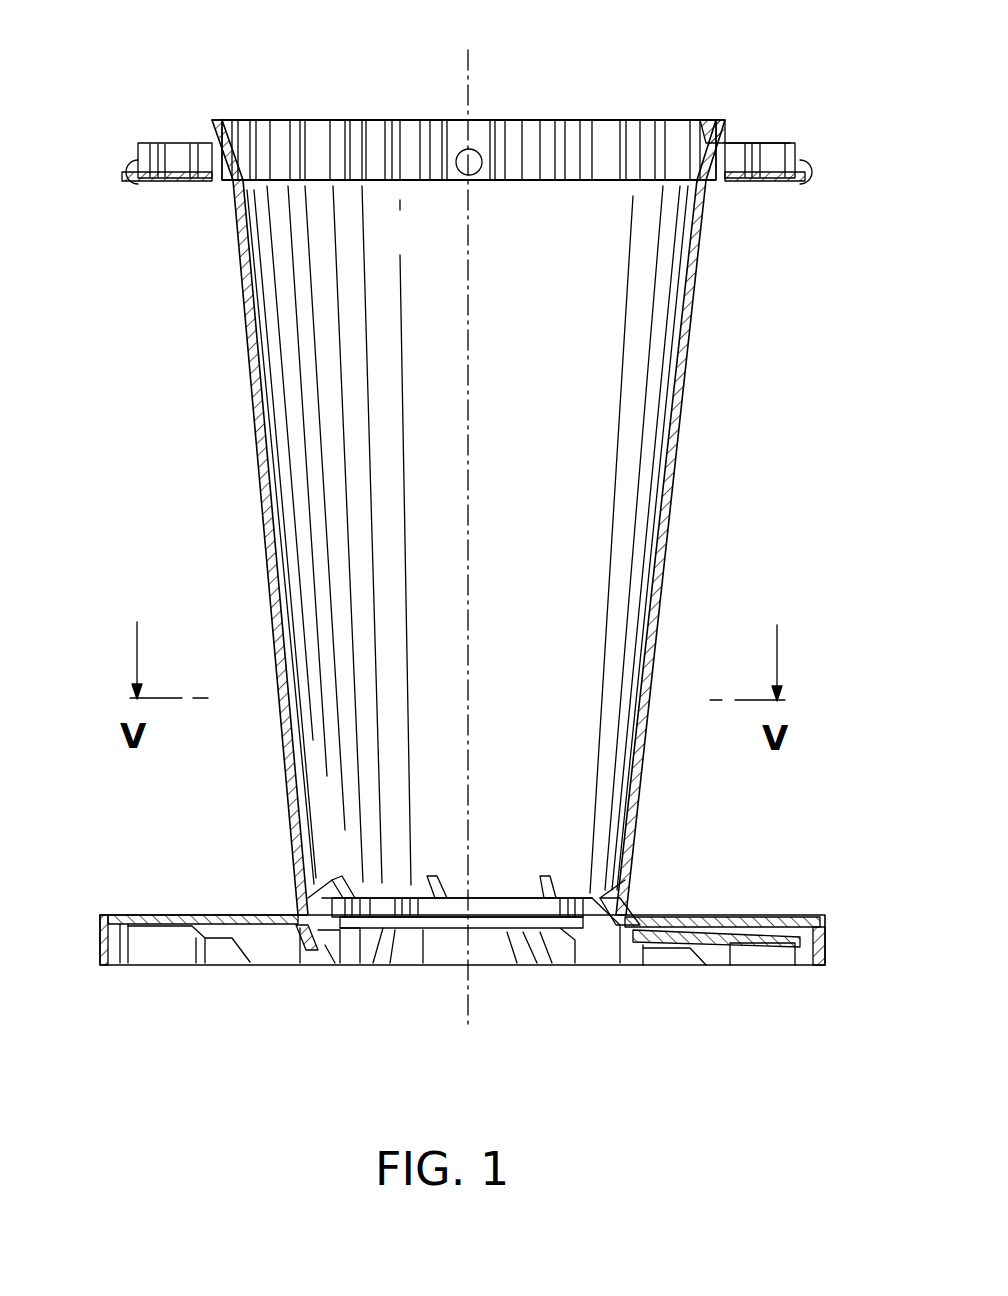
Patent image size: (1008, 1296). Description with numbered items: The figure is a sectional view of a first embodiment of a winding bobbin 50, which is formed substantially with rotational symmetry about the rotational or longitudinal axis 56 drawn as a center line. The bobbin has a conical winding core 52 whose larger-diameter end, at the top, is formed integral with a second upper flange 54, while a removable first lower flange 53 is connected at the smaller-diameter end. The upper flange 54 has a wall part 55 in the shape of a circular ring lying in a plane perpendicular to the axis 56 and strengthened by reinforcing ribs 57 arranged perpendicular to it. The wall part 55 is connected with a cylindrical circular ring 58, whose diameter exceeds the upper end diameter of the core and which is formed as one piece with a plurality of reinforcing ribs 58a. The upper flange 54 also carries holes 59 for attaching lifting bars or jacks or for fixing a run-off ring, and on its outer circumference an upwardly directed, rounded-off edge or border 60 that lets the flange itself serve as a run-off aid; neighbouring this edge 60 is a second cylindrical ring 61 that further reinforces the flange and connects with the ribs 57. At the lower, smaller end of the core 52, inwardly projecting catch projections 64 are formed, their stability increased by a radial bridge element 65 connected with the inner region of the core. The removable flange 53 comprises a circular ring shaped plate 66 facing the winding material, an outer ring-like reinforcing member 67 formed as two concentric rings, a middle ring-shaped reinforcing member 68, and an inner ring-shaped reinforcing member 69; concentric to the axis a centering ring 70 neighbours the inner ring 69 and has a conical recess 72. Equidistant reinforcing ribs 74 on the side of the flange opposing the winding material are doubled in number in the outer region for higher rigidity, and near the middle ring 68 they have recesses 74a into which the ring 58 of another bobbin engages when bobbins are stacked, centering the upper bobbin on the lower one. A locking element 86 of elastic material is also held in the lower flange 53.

The winding bobbin 50 is at (770, 427).
The conical winding core 52 is at (694, 296).
The first lower flange 53 is at (192, 913).
The second upper flange 54 is at (118, 178).
The wall part 55 is at (200, 184).
The rotational or longitudinal axis 56 is at (472, 72).
The reinforcing ribs 57 is at (182, 140).
The cylindrical circular ring 58 is at (216, 122).
The reinforcing ribs 58a is at (386, 120).
The holes 59 is at (478, 148).
The edge or border 60 is at (810, 188).
The second cylindrical ring 61 is at (796, 145).
The catch projections 64 is at (318, 936).
The radial bridge element 65 is at (312, 896).
The circular ring shaped plate 66 is at (670, 920).
The outer ring-like reinforcing member 67 is at (826, 956).
The middle reinforcing member 68 is at (713, 968).
The inner reinforcing member 69 is at (340, 942).
The centering ring 70 is at (378, 946).
The conical recess 72 is at (400, 948).
The reinforcing ribs 74 is at (150, 950).
The recesses 74a is at (205, 955).
The locking element 86 is at (765, 926).